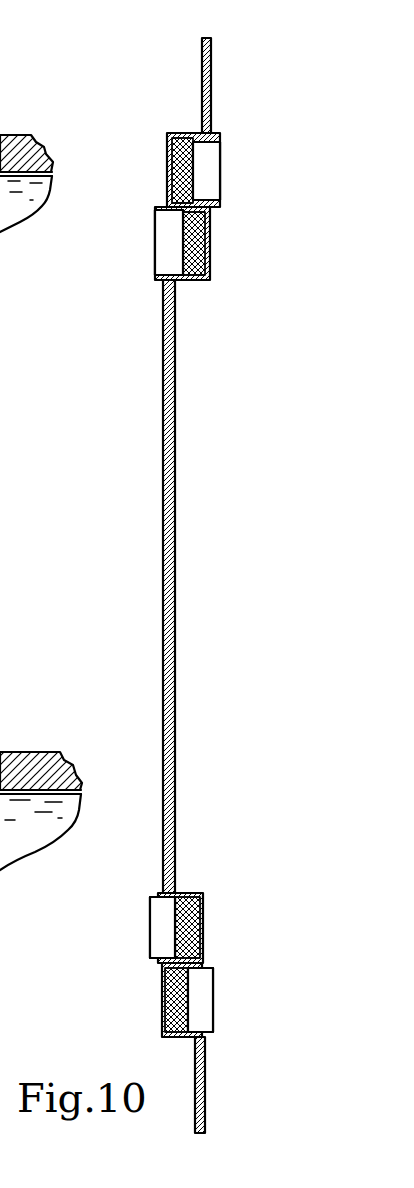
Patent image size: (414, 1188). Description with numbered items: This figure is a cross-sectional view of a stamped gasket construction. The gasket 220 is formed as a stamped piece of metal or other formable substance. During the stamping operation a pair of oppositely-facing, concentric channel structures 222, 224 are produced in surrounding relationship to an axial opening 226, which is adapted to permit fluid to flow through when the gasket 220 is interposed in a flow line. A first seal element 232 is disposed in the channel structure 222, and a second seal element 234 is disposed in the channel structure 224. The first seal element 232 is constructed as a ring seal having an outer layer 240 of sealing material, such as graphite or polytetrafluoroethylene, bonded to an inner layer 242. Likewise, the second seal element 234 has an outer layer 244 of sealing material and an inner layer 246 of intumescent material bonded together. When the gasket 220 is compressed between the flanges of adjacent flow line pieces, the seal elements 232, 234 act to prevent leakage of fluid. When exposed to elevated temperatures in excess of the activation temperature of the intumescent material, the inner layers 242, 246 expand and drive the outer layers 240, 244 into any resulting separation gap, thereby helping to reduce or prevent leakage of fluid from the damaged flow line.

The gasket 220 is at (182, 396).
The channel structure 222 is at (203, 143).
The channel structure 224 is at (175, 212).
The axial opening 226 is at (178, 513).
The first seal element 232 is at (222, 180).
The second seal element 234 is at (149, 253).
The outer layer 240 is at (206, 194).
The inner layer 242 is at (170, 143).
The outer layer 244 is at (165, 259).
The inner layer 246 is at (204, 244).